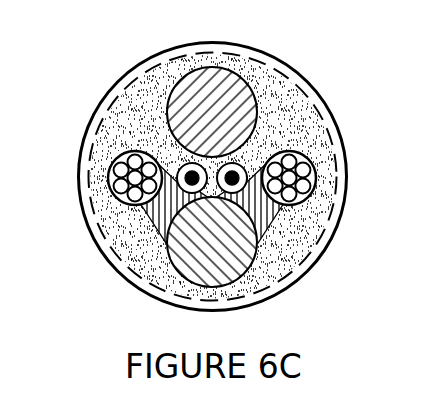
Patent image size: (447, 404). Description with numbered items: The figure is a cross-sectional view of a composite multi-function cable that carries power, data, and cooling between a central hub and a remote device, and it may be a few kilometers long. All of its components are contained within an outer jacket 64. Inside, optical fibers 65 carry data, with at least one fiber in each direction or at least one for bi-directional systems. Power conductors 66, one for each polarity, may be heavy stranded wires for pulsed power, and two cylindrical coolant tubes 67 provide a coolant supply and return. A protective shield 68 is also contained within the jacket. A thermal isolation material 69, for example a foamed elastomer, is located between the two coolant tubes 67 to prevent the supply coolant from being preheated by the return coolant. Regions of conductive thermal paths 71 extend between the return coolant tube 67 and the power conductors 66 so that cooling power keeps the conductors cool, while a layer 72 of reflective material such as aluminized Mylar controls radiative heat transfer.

The outer jacket 64 is at (268, 50).
The optical fibers 65 is at (177, 170).
The power conductors 66 is at (135, 177).
The coolant tubes 67 is at (188, 90).
The protective shield 68 is at (337, 253).
The thermal isolation material 69 is at (113, 193).
The conductive thermal paths 71 is at (165, 215).
The layer 72 is at (260, 300).